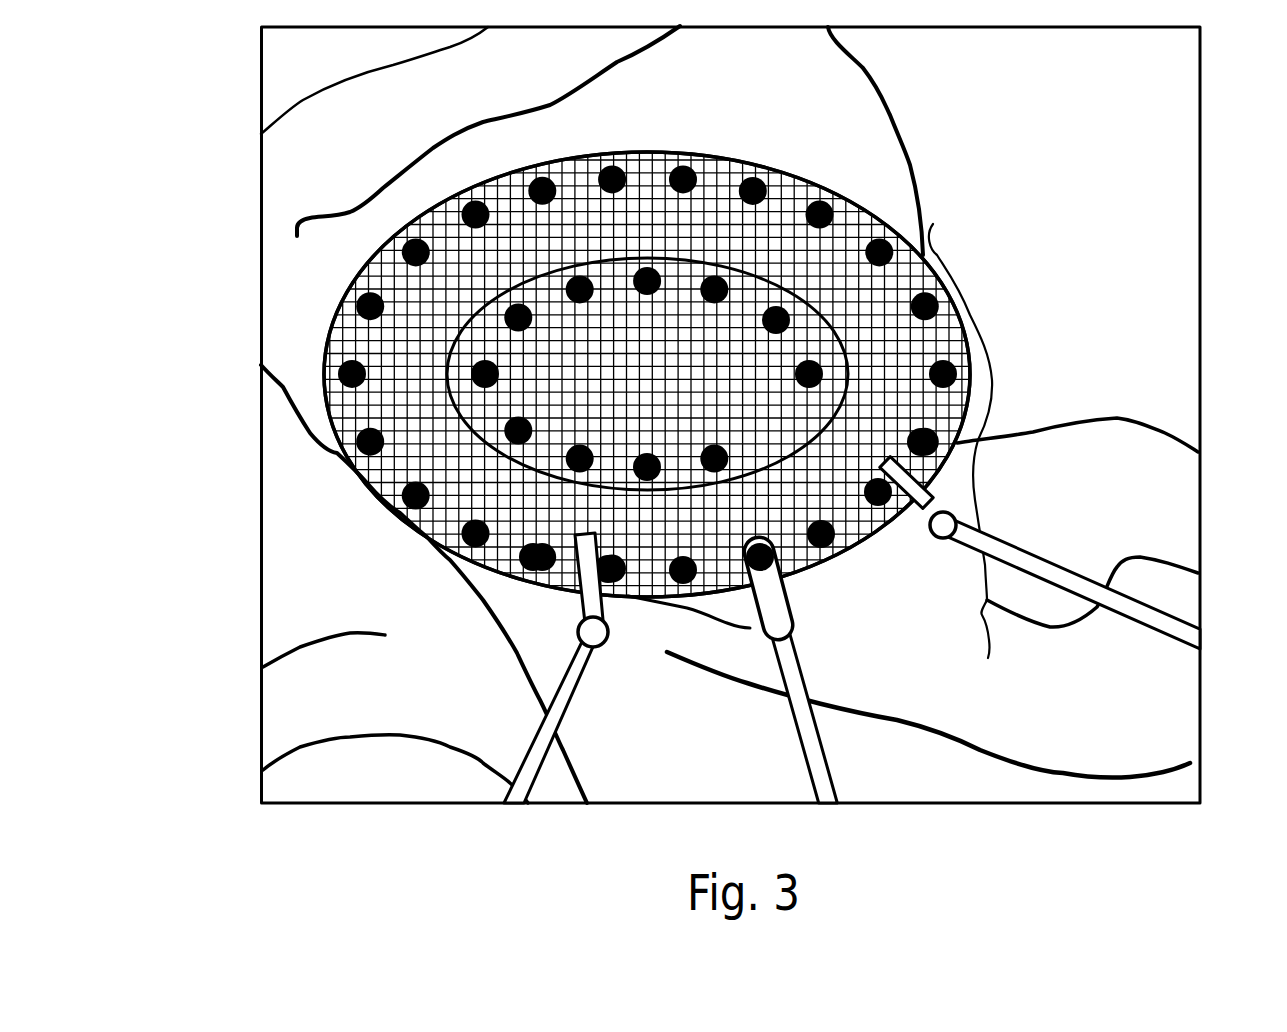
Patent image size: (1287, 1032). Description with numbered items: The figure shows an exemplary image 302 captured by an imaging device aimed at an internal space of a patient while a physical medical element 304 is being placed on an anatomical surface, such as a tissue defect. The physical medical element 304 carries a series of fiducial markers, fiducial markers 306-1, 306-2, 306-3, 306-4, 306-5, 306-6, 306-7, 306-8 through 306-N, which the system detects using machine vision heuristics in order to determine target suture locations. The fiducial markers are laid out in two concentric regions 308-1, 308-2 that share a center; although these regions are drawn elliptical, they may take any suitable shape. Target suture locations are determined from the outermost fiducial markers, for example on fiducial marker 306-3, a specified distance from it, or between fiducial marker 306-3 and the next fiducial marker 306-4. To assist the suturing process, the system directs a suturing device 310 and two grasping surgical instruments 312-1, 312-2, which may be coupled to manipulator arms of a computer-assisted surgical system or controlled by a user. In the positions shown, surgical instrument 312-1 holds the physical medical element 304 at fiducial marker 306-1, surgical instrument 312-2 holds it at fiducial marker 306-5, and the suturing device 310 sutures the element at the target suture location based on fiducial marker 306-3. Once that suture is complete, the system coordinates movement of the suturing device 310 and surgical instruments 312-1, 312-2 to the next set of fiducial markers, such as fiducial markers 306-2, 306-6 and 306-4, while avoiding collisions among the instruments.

The image 302 is at (1200, 198).
The physical medical element 304 is at (727, 158).
The fiducial marker 306-1 is at (610, 587).
The fiducial marker 306-2 is at (692, 585).
The fiducial marker 306-3 is at (773, 605).
The fiducial marker 306-4 is at (830, 550).
The fiducial marker 306-5 is at (883, 503).
The fiducial marker 306-6 is at (932, 440).
The fiducial marker 306-7 is at (827, 367).
The fiducial marker 306-8 is at (793, 317).
The fiducial marker 306-N is at (527, 567).
The concentric region 308-1 is at (487, 339).
The concentric region 308-2 is at (353, 417).
The suturing device 310 is at (797, 607).
The surgical instrument 312-1 is at (588, 600).
The surgical instrument 312-2 is at (915, 497).